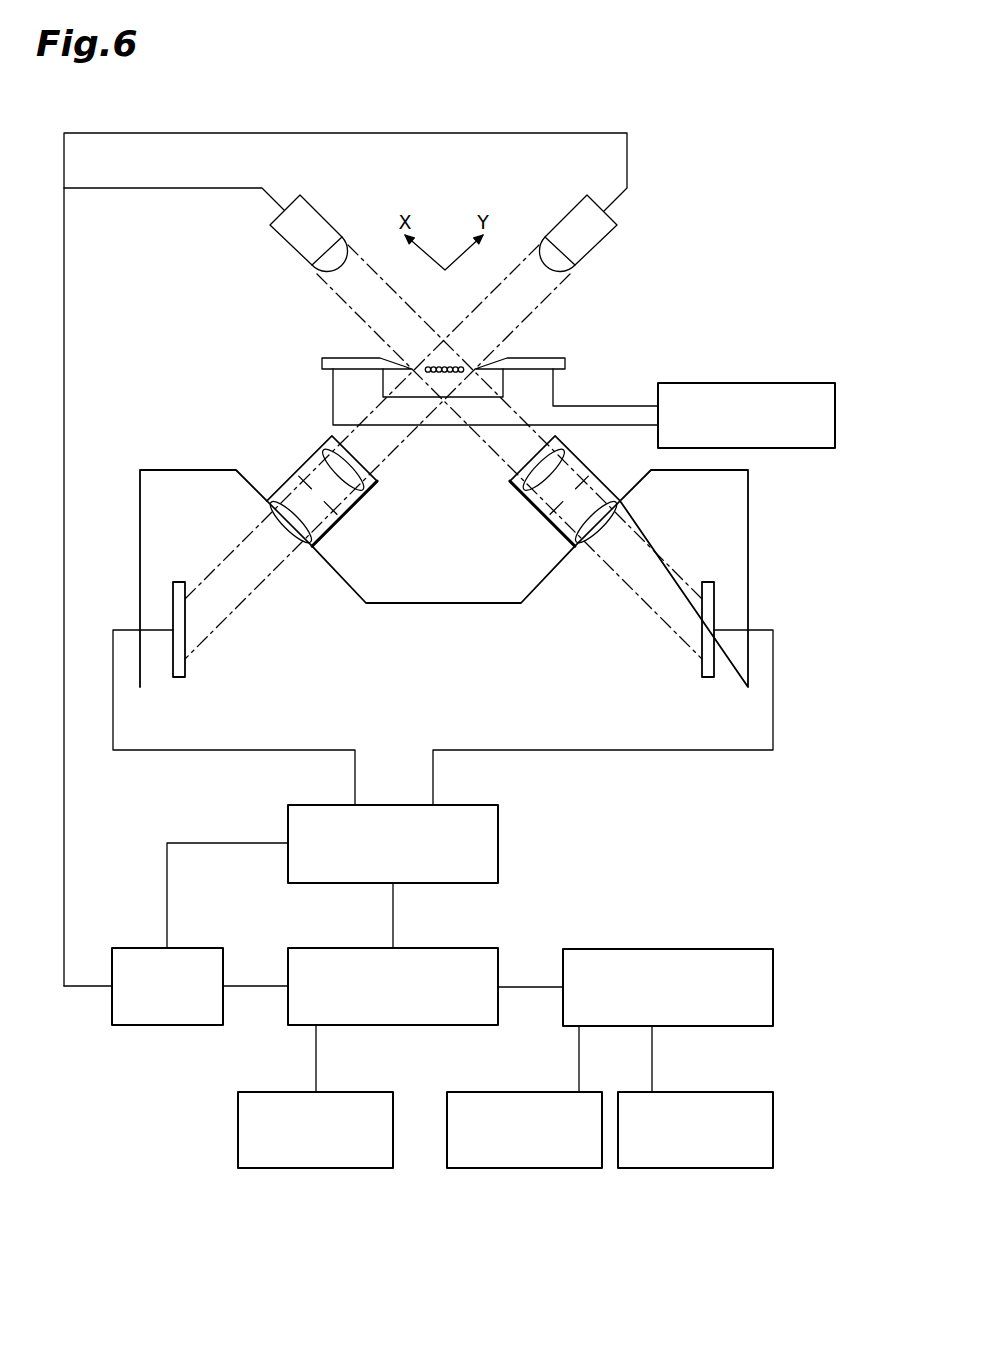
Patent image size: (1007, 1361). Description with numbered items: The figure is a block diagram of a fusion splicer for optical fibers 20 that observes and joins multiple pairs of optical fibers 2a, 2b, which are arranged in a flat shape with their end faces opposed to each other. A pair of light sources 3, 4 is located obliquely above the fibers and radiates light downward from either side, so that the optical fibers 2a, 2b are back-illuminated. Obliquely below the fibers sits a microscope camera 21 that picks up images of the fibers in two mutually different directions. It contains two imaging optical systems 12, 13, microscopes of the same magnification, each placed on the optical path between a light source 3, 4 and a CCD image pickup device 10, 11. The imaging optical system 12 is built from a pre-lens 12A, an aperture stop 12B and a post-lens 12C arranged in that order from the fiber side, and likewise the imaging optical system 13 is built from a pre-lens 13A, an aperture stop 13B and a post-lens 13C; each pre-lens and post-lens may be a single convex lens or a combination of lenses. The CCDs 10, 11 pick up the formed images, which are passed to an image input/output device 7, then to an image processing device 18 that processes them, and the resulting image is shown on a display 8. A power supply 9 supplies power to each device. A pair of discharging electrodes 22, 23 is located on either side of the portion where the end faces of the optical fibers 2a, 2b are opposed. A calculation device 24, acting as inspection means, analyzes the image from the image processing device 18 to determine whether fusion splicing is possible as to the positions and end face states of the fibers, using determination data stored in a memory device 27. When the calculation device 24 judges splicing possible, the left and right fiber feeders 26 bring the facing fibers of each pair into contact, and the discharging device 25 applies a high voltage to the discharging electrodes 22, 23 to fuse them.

The optical fiber 2a is at (447, 329).
The optical fiber 2b is at (441, 355).
The light source 3 is at (319, 213).
The light source 4 is at (619, 220).
The image input/output device 7 is at (498, 849).
The display 8 is at (360, 1092).
The power supply 9 is at (208, 948).
The CCD (image pickup device) 10 is at (714, 594).
The CCD (image pickup device) 11 is at (172, 591).
The imaging optical system 12 is at (541, 497).
The pre-lens 12A is at (525, 491).
The aperture stop 12B is at (554, 508).
The post-lens 12C is at (565, 526).
The imaging optical system 13 is at (351, 498).
The pre-lens 13A is at (362, 491).
The aperture stop 13B is at (333, 508).
The post-lens 13C is at (325, 527).
The image processing device 18 is at (482, 948).
The fusion splicer for optical fibers 20 is at (724, 259).
The microscope camera 21 is at (188, 470).
The discharging electrode 22 is at (330, 358).
The discharging electrode 23 is at (557, 358).
The calculation device (inspection means) 24 is at (709, 949).
The discharging device 25 is at (787, 383).
The left and right fiber feeders 26 is at (712, 1092).
The memory device 27 is at (522, 1092).